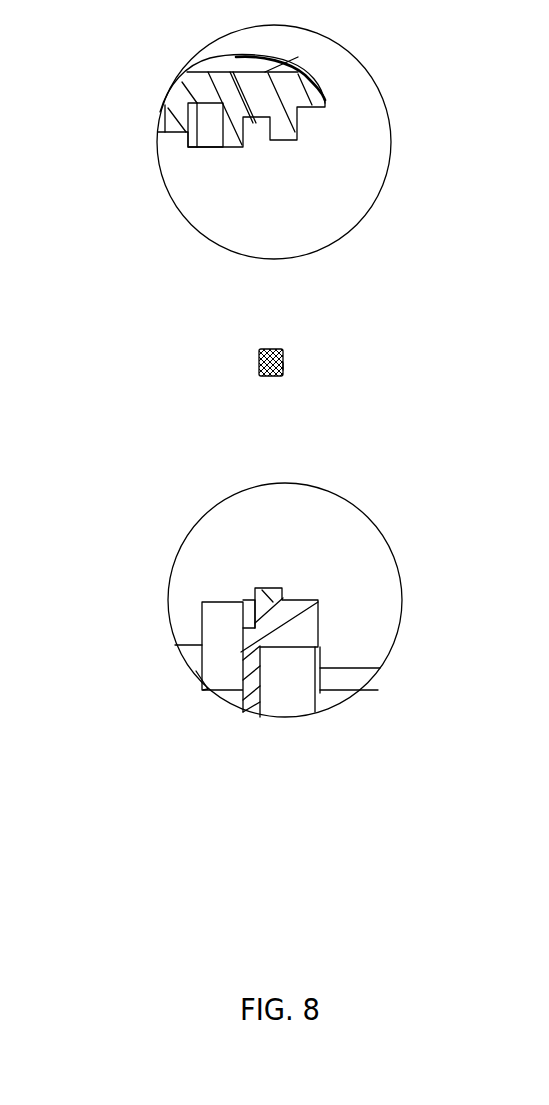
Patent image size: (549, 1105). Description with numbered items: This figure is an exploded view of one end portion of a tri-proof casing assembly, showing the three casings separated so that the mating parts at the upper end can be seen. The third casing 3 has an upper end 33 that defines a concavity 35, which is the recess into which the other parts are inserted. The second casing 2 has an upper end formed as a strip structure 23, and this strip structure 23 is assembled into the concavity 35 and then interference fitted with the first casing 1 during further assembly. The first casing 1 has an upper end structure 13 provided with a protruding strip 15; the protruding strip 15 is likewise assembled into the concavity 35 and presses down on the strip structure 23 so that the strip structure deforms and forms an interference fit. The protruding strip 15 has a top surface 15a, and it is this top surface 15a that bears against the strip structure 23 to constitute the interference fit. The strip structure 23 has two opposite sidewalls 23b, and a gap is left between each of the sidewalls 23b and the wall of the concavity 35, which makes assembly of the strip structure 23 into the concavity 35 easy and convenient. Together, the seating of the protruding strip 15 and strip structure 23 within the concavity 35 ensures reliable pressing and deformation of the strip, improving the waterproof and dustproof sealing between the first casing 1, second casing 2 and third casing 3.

The first casing 1 is at (148, 620).
The second casing 2 is at (158, 365).
The third casing 3 is at (123, 137).
The upper end structure 13 is at (290, 628).
The protruding strip 15 is at (266, 588).
The top surface 15a is at (278, 592).
The strip structure 23 is at (270, 349).
The opposite sidewalls 23b is at (285, 363).
The upper end 33 is at (287, 90).
The concavity 35 is at (212, 55).